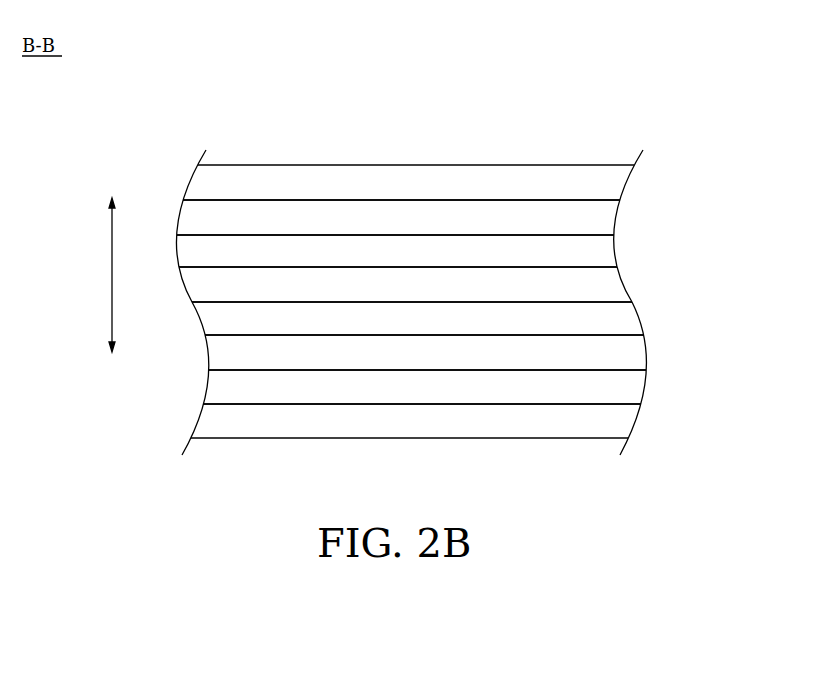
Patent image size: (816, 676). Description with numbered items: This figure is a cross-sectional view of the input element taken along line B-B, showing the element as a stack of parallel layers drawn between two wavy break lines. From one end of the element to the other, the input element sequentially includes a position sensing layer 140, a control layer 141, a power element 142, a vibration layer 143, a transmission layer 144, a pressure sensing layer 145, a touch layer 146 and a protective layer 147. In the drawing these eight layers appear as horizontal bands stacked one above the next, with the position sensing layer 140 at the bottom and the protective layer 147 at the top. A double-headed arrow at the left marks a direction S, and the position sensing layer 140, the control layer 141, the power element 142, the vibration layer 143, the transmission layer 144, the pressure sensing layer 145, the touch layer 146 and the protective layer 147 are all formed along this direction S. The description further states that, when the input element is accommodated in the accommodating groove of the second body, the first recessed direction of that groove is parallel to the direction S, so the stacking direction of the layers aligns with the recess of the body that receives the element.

The direction S is at (112, 273).
The position sensing layer 140 is at (608, 424).
The control layer 141 is at (608, 388).
The power element 142 is at (608, 351).
The vibration layer 143 is at (608, 318).
The transmission layer 144 is at (608, 286).
The pressure sensing layer 145 is at (608, 253).
The touch layer 146 is at (608, 219).
The protective layer 147 is at (608, 183).